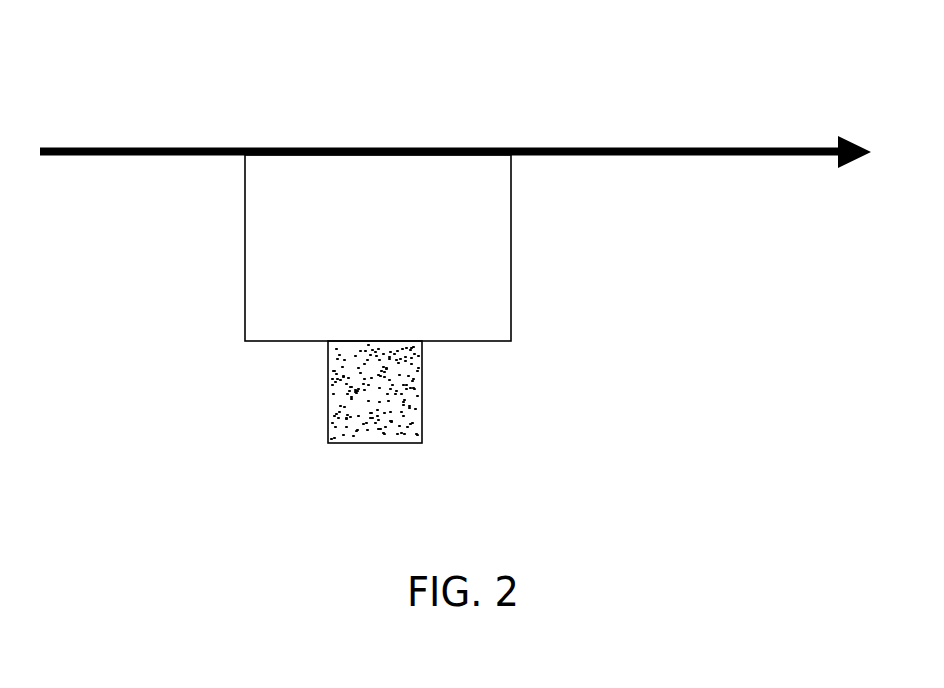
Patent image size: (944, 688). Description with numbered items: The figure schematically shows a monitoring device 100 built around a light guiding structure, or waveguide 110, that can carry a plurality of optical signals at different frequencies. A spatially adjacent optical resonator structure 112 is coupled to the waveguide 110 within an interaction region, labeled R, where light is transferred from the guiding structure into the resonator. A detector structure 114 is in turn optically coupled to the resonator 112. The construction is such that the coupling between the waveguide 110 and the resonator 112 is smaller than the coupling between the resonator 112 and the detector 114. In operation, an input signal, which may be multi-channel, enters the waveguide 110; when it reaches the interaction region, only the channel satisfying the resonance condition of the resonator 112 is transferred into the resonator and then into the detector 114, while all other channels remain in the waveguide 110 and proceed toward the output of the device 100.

The monitoring device 100 is at (422, 86).
The light guiding structure (waveguide) 110 is at (455, 153).
The optical resonator structure 112 is at (511, 241).
The detector structure 114 is at (334, 403).